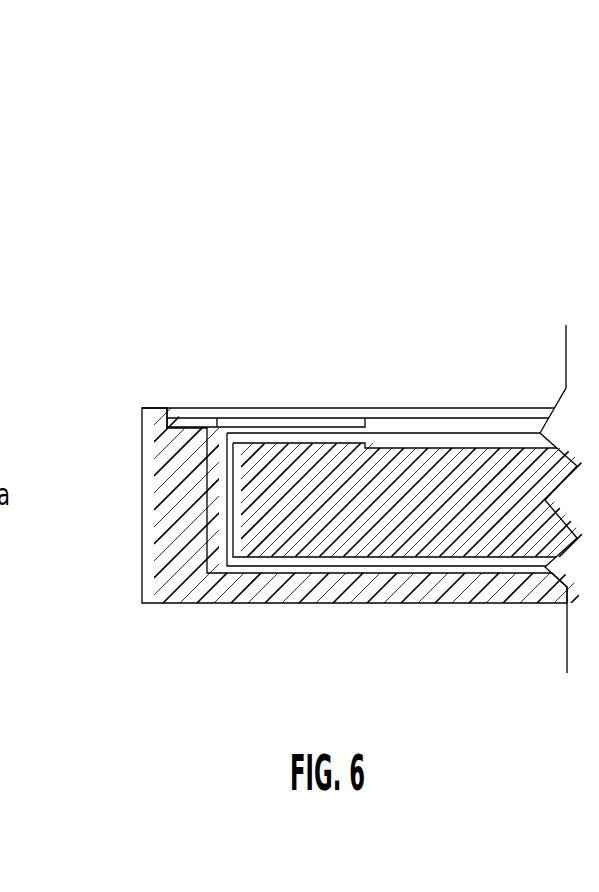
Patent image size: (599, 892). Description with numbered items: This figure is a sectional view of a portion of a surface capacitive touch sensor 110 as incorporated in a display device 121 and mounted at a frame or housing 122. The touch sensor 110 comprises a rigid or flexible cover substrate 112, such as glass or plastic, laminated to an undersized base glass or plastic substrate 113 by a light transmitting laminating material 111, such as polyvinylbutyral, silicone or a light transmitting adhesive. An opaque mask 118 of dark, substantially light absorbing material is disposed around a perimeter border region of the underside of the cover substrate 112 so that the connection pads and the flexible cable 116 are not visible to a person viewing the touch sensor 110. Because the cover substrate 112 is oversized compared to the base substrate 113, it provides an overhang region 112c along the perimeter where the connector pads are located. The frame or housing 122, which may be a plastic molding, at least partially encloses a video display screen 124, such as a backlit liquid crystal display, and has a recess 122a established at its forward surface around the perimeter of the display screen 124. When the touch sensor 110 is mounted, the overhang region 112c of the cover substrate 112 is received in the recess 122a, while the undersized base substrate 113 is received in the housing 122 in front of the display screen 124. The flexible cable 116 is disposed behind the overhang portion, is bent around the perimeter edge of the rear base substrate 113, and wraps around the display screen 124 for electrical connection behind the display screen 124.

The surface capacitive touch sensor 110 is at (436, 334).
The light transmitting laminating material 111 is at (412, 430).
The cover substrate 112 is at (318, 414).
The overhang region 112c is at (175, 410).
The base substrate 113 is at (497, 428).
The flexible cable 116 is at (335, 562).
The opaque mask 118 is at (218, 423).
The display device 121 is at (387, 167).
The frame or housing 122 is at (162, 544).
The recess 122a is at (170, 443).
The video display screen 124 is at (442, 538).